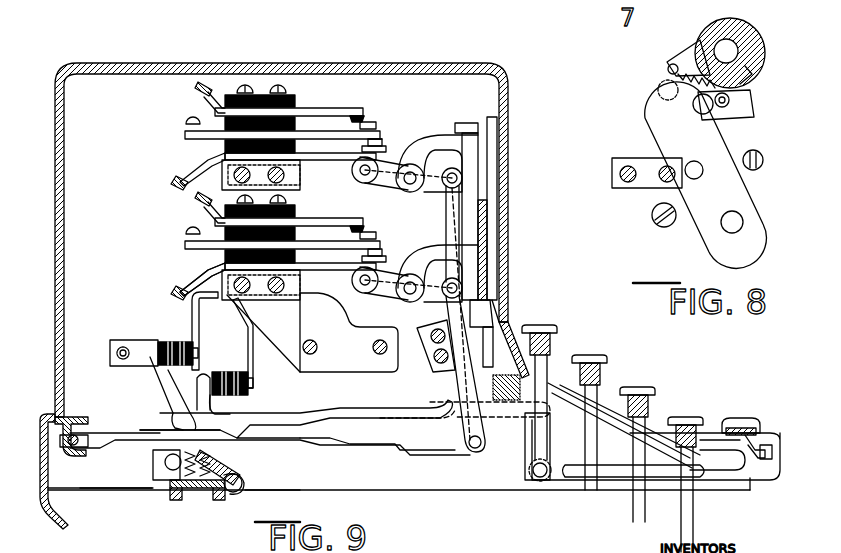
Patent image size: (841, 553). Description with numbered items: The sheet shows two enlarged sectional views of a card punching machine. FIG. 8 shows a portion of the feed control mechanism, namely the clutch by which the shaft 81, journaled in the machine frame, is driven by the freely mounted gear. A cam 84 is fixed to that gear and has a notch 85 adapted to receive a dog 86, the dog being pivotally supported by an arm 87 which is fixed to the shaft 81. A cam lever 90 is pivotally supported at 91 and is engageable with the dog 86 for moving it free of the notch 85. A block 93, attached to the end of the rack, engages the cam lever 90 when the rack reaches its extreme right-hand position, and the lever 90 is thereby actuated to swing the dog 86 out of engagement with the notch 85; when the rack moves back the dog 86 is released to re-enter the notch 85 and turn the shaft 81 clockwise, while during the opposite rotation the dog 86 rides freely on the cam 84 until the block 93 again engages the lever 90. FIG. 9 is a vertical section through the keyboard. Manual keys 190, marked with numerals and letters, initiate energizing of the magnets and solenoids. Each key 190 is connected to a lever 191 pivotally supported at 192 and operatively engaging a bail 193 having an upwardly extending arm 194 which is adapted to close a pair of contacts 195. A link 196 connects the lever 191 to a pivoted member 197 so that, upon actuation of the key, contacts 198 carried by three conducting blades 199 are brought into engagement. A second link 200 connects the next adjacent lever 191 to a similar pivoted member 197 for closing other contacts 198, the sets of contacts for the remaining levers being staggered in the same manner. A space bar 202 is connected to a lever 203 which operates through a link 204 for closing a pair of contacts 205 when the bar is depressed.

In FIG. 8, the shaft 81 is at (742, 38).
In FIG. 8, the cam 84 is at (722, 24).
In FIG. 8, the notch 85 is at (752, 92).
In FIG. 8, the dog 86 is at (752, 103).
In FIG. 8, the arm 87 is at (694, 48).
In FIG. 8, the cam lever 90 is at (701, 210).
In FIG. 8, the pivot 91 is at (742, 228).
In FIG. 8, the block 93 is at (614, 166).
In FIG. 9, the keys 190 is at (583, 356).
In FIG. 9, the lever 191 is at (322, 440).
In FIG. 9, the pivot 192 is at (78, 447).
In FIG. 9, the bail 193 is at (268, 499).
In FIG. 9, the arm 194 is at (201, 378).
In FIG. 9, the contacts 195 is at (226, 392).
In FIG. 9, the link 196 is at (458, 388).
In FIG. 9, the pivoted member 197 is at (388, 175).
In FIG. 9, the contacts 198 is at (382, 140).
In FIG. 9, the conducting blades 199 is at (210, 268).
In FIG. 9, the link 200 is at (450, 212).
In FIG. 9, the space bar 202 is at (735, 418).
In FIG. 9, the lever 203 is at (555, 476).
In FIG. 9, the link 204 is at (316, 418).
In FIG. 9, the contacts 205 is at (178, 342).